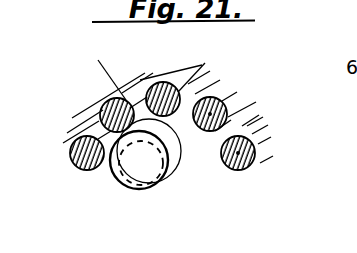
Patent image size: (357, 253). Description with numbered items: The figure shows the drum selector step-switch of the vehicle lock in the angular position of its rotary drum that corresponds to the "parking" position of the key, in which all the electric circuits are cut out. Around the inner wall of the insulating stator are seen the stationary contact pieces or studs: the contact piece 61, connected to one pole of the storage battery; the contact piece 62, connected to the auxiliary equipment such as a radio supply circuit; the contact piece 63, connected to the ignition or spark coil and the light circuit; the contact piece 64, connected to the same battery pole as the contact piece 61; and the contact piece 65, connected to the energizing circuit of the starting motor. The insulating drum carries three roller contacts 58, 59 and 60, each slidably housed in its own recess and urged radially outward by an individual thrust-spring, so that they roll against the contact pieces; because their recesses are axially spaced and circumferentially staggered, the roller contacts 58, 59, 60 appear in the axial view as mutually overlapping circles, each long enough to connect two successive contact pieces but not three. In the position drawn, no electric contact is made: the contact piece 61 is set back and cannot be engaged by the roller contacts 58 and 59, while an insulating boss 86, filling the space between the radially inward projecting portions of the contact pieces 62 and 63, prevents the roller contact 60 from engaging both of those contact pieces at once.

The roller contact 58 is at (117, 182).
The roller contact 59 is at (173, 161).
The roller contact 60 is at (175, 161).
The contact piece 61 is at (73, 145).
The contact piece 62 is at (101, 107).
The contact piece 63 is at (177, 93).
The contact piece 64 is at (210, 114).
The contact piece 65 is at (238, 153).
The insulating boss 86 is at (104, 67).